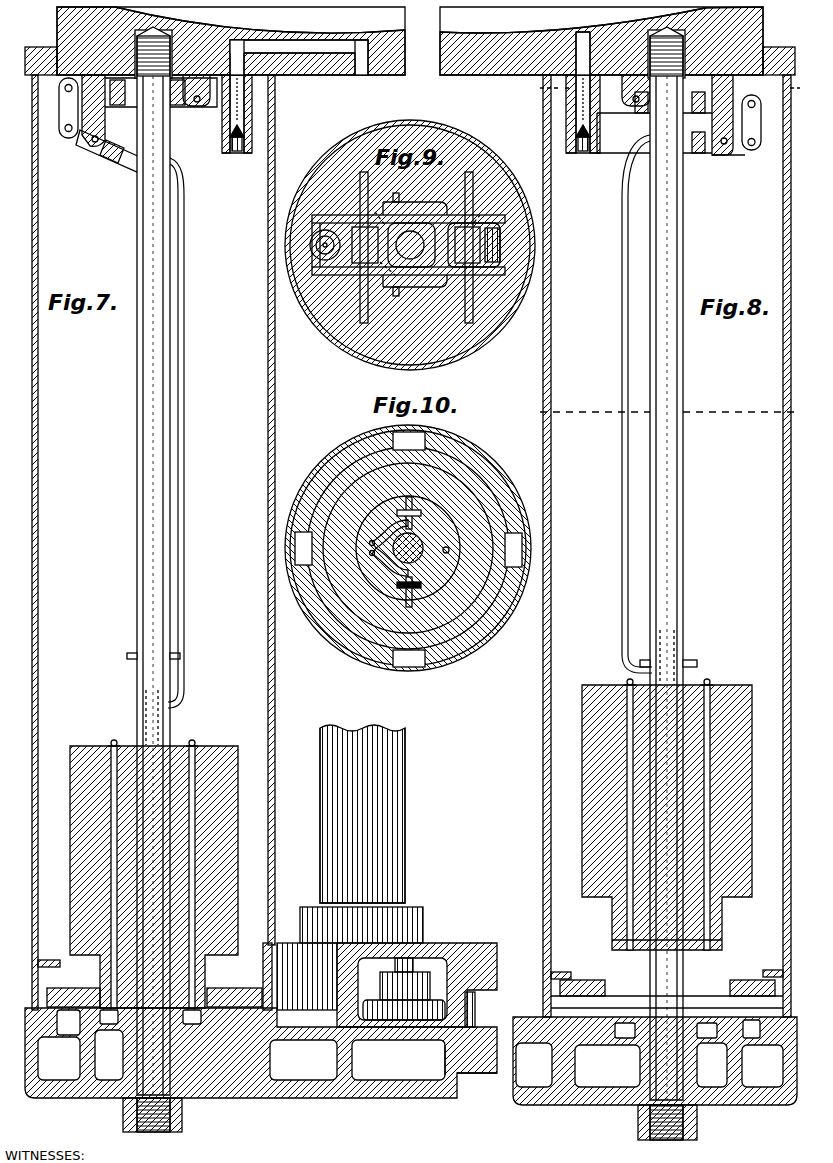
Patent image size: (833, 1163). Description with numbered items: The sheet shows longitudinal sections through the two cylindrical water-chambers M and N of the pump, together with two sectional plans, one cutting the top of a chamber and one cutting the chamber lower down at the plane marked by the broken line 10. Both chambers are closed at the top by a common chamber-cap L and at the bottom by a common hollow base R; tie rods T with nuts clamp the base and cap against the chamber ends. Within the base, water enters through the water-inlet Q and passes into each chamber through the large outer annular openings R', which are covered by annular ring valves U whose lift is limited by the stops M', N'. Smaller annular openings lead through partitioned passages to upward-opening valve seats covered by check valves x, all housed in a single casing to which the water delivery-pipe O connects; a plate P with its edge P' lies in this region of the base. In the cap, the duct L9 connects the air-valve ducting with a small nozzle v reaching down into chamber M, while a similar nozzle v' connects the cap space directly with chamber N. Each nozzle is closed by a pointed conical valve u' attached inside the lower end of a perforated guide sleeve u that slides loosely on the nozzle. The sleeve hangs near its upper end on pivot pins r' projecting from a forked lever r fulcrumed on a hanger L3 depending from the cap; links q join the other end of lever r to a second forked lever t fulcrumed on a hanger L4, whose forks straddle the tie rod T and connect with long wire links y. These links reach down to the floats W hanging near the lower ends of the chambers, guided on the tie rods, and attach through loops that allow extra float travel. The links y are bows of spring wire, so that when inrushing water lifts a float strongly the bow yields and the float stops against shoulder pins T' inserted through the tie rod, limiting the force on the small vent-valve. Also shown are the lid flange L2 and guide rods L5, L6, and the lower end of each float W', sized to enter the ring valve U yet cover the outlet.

In FIG. 7, the chamber-cap L is at (231, 41).
In FIG. 8, the chamber-cap L is at (601, 41).
In FIG. 7, the lid flange L2 is at (39, 51).
In FIG. 8, the lid flange L2 is at (779, 51).
In FIG. 7, the hanger L3 is at (161, 103).
In FIG. 8, the hanger L3 is at (654, 114).
In FIG. 9, the hanger L3 is at (408, 235).
In FIG. 7, the hanger L4 is at (109, 151).
In FIG. 8, the hanger L4 is at (728, 165).
In FIG. 9, the hanger L4 is at (432, 234).
In FIG. 9, the guide rod L5 is at (466, 256).
In FIG. 9, the guide rod L6 is at (363, 256).
In FIG. 7, the duct L9 is at (305, 53).
In FIG. 7, the link q is at (59, 108).
In FIG. 8, the link q is at (665, 115).
In FIG. 9, the link q is at (500, 245).
In FIG. 7, the forked lever r is at (133, 110).
In FIG. 8, the forked lever r is at (740, 115).
In FIG. 9, the forked lever r is at (422, 257).
In FIG. 9, the pivot pin r' is at (321, 242).
In FIG. 7, the forked lever t is at (104, 162).
In FIG. 8, the forked lever t is at (746, 141).
In FIG. 9, the forked lever t is at (411, 268).
In FIG. 7, the perforated guide sleeve u is at (241, 114).
In FIG. 8, the perforated guide sleeve u is at (574, 114).
In FIG. 9, the perforated guide sleeve u is at (322, 244).
In FIG. 7, the conical valve u' is at (237, 149).
In FIG. 8, the conical valve u' is at (583, 149).
In FIG. 7, the nozzle v is at (245, 70).
In FIG. 9, the nozzle v is at (316, 254).
In FIG. 8, the nozzle v' is at (571, 61).
In FIG. 7, the water-chamber M is at (153, 542).
In FIG. 10, the water-chamber M is at (303, 550).
In FIG. 7, the stop M' is at (155, 975).
In FIG. 10, the stop M' is at (409, 549).
In FIG. 8, the water-chamber N is at (667, 546).
In FIG. 8, the stop N' is at (667, 965).
In FIG. 7, the tie rod T is at (139, 561).
In FIG. 8, the tie rod T is at (674, 563).
In FIG. 7, the shoulder pin T' is at (139, 657).
In FIG. 8, the shoulder pin T' is at (678, 659).
In FIG. 7, the float W is at (162, 877).
In FIG. 8, the float W is at (654, 817).
In FIG. 10, the float W is at (408, 548).
In FIG. 7, the piston rod W' is at (165, 736).
In FIG. 8, the piston rod W' is at (654, 673).
In FIG. 10, the piston rod W' is at (421, 548).
In FIG. 7, the annular ring valve U is at (234, 992).
In FIG. 8, the annular ring valve U is at (667, 994).
In FIG. 10, the annular ring valve U is at (408, 548).
In FIG. 7, the water delivery-pipe O is at (362, 814).
In FIG. 7, the plate P is at (387, 967).
In FIG. 7, the plate edge P' is at (489, 995).
In FIG. 7, the check valve x is at (404, 989).
In FIG. 7, the water-inlet Q is at (187, 1058).
In FIG. 8, the water-inlet Q is at (649, 1065).
In FIG. 7, the base R is at (261, 1068).
In FIG. 8, the base R is at (655, 1074).
In FIG. 7, the annular opening R' is at (185, 1045).
In FIG. 8, the annular opening R' is at (653, 1053).
In FIG. 7, the wire link y is at (184, 433).
In FIG. 8, the wire link y is at (628, 404).
In FIG. 9, the wire link y is at (394, 259).
In FIG. 10, the wire link y is at (389, 549).
In FIG. 8, the section line 10 is at (668, 411).